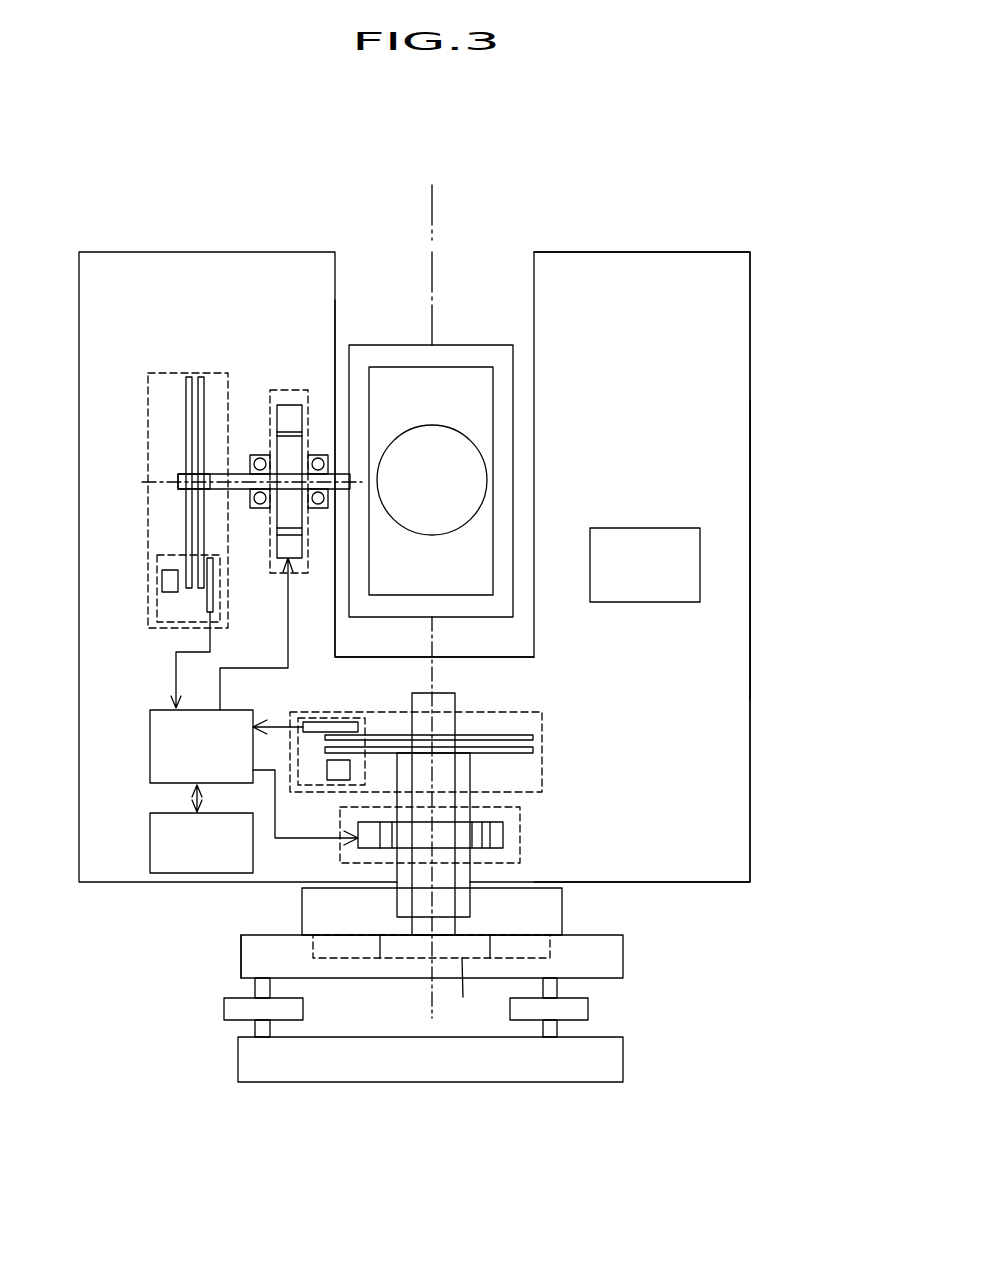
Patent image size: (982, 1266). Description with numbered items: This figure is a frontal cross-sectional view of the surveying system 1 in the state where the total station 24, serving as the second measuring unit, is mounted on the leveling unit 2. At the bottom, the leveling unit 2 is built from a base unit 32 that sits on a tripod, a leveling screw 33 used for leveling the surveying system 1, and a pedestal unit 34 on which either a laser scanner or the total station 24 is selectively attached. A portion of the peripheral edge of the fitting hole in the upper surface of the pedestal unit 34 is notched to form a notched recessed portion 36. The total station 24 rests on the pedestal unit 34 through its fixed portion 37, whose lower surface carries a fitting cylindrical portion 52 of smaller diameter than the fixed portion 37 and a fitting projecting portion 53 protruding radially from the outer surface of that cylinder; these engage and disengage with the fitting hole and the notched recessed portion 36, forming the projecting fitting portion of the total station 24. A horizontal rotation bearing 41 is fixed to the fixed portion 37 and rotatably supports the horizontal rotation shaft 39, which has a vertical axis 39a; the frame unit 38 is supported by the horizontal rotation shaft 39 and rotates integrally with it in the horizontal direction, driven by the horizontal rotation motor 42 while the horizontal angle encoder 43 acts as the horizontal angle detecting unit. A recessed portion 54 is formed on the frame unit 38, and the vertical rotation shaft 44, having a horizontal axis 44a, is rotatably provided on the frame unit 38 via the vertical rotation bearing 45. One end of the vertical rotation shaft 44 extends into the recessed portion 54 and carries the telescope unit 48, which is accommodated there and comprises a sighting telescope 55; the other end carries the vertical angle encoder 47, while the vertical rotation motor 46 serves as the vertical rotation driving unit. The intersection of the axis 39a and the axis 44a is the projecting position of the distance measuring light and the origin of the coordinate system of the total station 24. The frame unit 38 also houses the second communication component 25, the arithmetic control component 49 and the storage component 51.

The surveying system 1 is at (63, 201).
The leveling unit 2 is at (224, 958).
The total station 24 is at (764, 531).
The second communication component 25 is at (658, 528).
The base unit 32 is at (623, 1050).
The leveling screw 33 is at (223, 1008).
The pedestal unit 34 is at (623, 948).
The notched recessed portion 36 is at (388, 948).
The fixed portion 37 is at (562, 903).
The frame unit 38 is at (750, 390).
The horizontal rotation shaft 39 is at (455, 723).
The vertical axis 39a is at (428, 662).
The horizontal rotation bearing 41 is at (469, 903).
The horizontal rotation motor 42 is at (520, 838).
The horizontal angle encoder 43 is at (542, 730).
The vertical rotation shaft 44 is at (342, 493).
The horizontal axis 44a is at (160, 480).
The vertical rotation bearing 45 is at (258, 455).
The vertical rotation motor 46 is at (290, 390).
The vertical angle encoder 47 is at (170, 373).
The telescope unit 48 is at (467, 345).
The arithmetic control component 49 is at (150, 752).
The storage component 51 is at (150, 840).
The fitting cylindrical portion 52 is at (550, 947).
The fitting projecting portion 53 is at (461, 993).
The recessed portion 54 is at (358, 308).
The sighting telescope 55 is at (462, 430).